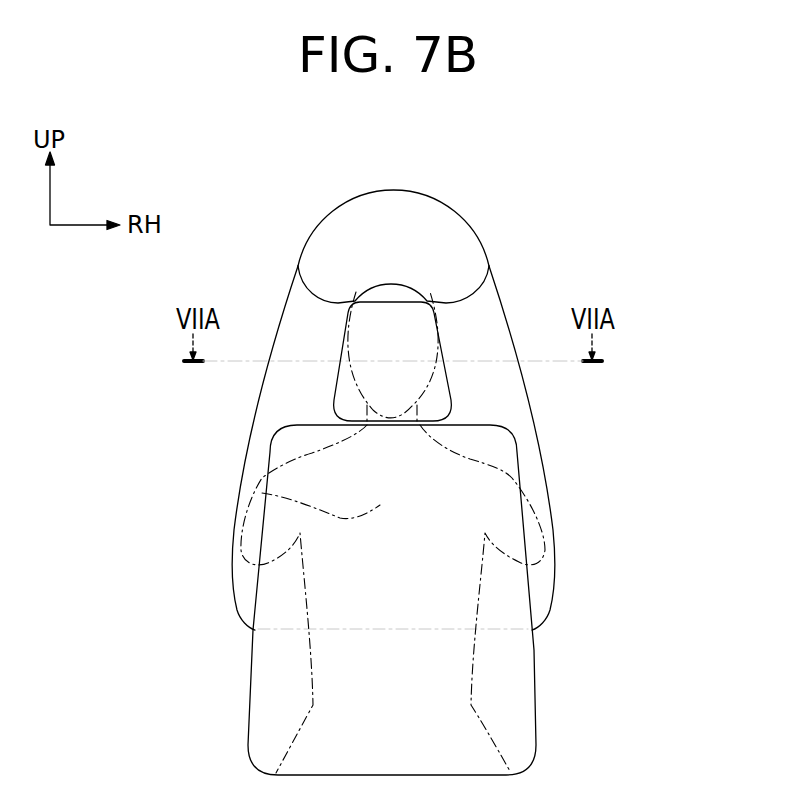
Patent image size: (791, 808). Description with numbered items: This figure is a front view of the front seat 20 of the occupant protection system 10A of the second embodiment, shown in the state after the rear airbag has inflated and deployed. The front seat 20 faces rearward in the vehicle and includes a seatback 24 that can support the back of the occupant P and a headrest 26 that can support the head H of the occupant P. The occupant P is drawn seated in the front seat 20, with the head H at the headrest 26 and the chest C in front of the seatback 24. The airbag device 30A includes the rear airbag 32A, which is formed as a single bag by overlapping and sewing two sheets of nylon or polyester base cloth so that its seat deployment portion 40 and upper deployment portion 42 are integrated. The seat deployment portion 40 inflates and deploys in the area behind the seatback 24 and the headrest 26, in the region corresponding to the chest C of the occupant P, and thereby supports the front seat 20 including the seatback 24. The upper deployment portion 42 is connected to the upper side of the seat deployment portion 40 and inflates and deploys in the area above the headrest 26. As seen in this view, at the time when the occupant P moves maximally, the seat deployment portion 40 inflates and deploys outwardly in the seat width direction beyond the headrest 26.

The occupant protection system 10A is at (672, 342).
The front seat 20 is at (533, 653).
The seatback 24 is at (512, 710).
The headrest 26 is at (443, 402).
The airbag device 30A is at (504, 254).
The rear airbag 32A is at (562, 181).
The seat deployment portion 40 is at (493, 327).
The upper deployment portion 42 is at (455, 227).
The head H is at (353, 335).
The occupant P is at (310, 452).
The chest C is at (262, 493).